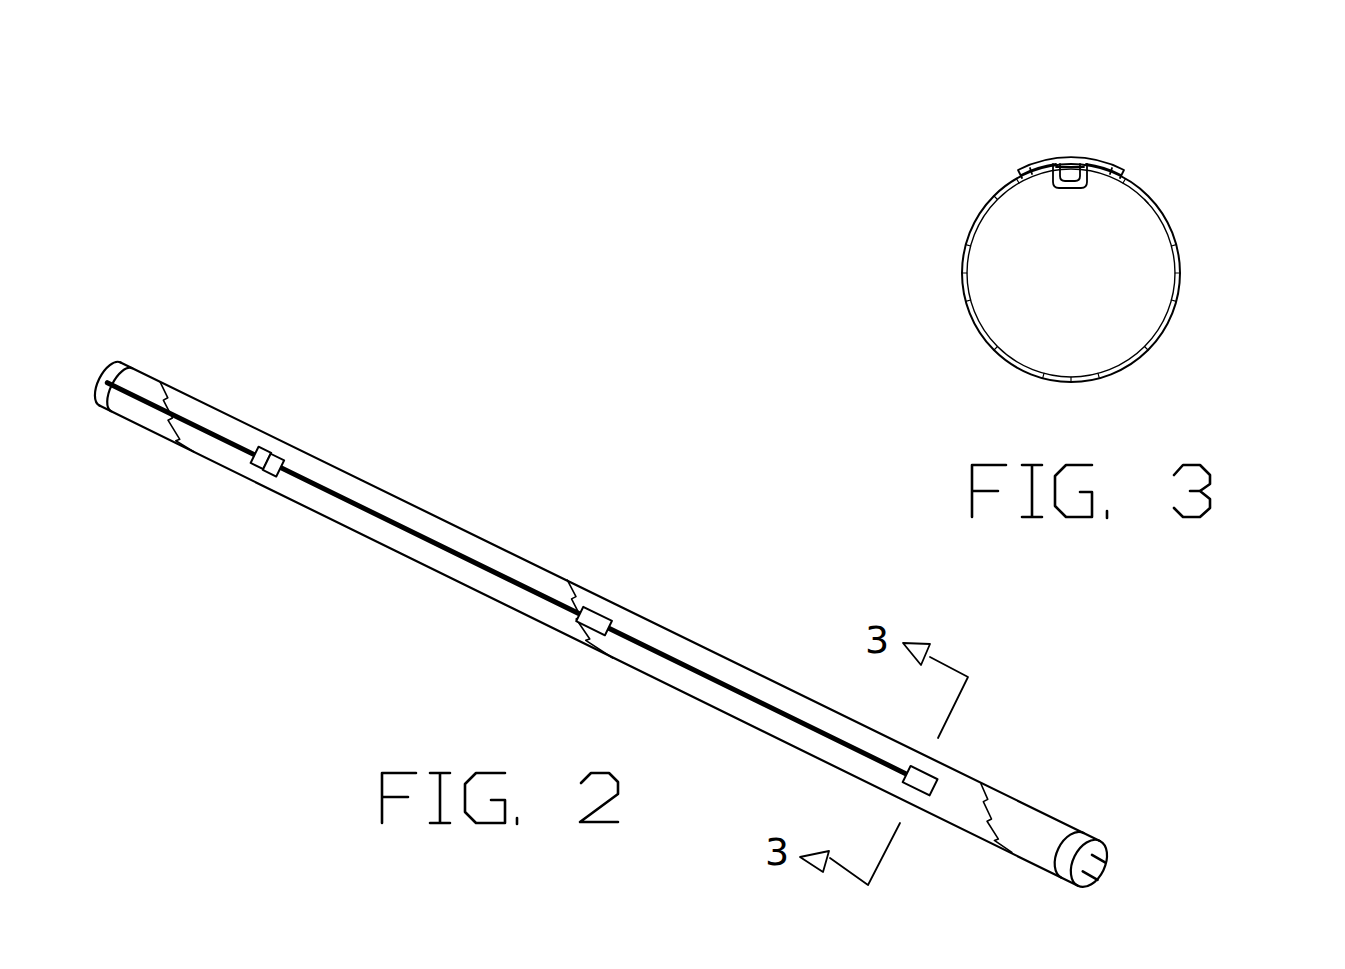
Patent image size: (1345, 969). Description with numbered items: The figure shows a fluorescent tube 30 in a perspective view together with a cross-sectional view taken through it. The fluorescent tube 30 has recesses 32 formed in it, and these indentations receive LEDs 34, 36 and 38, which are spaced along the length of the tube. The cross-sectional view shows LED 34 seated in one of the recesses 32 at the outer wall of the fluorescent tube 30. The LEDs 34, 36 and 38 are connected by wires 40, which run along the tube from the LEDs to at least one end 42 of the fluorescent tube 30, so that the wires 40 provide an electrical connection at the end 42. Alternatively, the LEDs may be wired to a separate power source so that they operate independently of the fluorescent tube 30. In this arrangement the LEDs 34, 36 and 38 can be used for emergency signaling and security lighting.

In FIG. 2, the fluorescent tube 30 is at (372, 532).
In FIG. 3, the fluorescent tube 30 is at (1172, 302).
In FIG. 2, the recesses 32 is at (256, 466).
In FIG. 3, the recesses 32 is at (1065, 163).
In FIG. 2, the LED 34 is at (290, 457).
In FIG. 3, the LED 34 is at (1069, 185).
In FIG. 2, the LED 36 is at (600, 610).
In FIG. 2, the LED 38 is at (935, 770).
In FIG. 2, the wires 40 is at (433, 538).
In FIG. 2, the end 42 is at (116, 360).